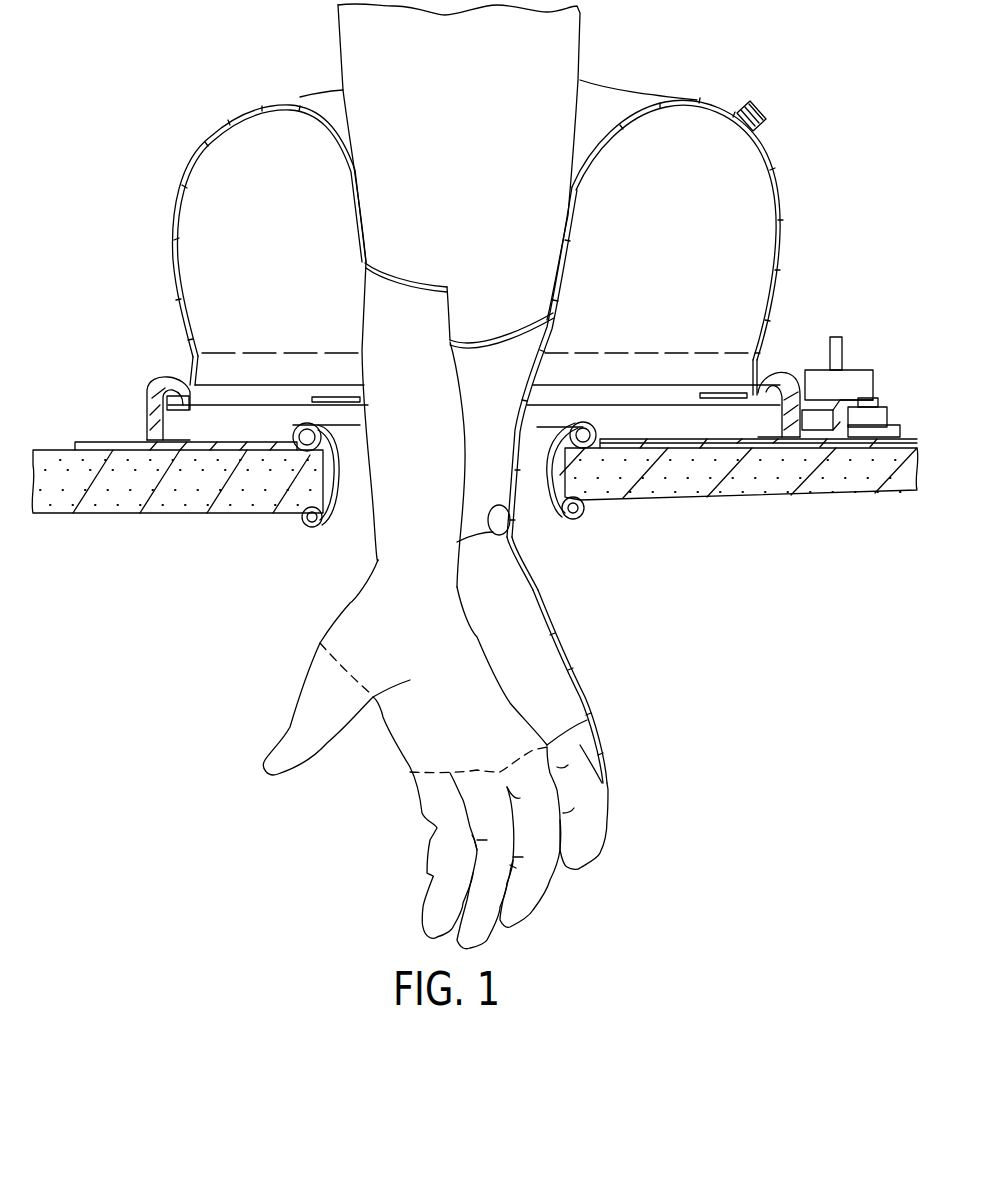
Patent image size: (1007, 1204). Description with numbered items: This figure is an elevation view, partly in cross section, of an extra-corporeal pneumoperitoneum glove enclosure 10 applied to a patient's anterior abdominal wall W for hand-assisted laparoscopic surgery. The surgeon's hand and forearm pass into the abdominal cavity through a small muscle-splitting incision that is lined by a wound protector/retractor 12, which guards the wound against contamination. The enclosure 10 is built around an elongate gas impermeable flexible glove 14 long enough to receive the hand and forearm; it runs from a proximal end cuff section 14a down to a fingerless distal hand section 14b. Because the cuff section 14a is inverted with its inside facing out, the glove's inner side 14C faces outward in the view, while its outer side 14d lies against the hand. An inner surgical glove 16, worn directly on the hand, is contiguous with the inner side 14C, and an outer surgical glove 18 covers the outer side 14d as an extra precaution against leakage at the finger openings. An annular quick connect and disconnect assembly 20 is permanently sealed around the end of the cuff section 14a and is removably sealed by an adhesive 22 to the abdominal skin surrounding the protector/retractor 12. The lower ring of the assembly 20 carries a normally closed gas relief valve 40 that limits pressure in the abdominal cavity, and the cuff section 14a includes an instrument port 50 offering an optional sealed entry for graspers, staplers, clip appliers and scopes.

The extra-corporeal pneumoperitoneum glove enclosure 10 is at (153, 177).
The wound protector/retractor 12 is at (345, 511).
The elongate gas impermeable flexible glove 14 is at (480, 431).
The proximal end cuff section 14a is at (745, 280).
The distal hand section 14b is at (567, 656).
The inner side 14C is at (510, 547).
The outer side 14d is at (567, 240).
The inner surgical glove 16 is at (512, 357).
The outer surgical glove 18 is at (345, 633).
The annular quick connect and disconnect assembly 20 is at (143, 390).
The adhesive 22 is at (73, 463).
The gas relief valve 40 is at (867, 364).
The instrument port 50 is at (767, 107).
The anterior abdominal wall W is at (93, 503).